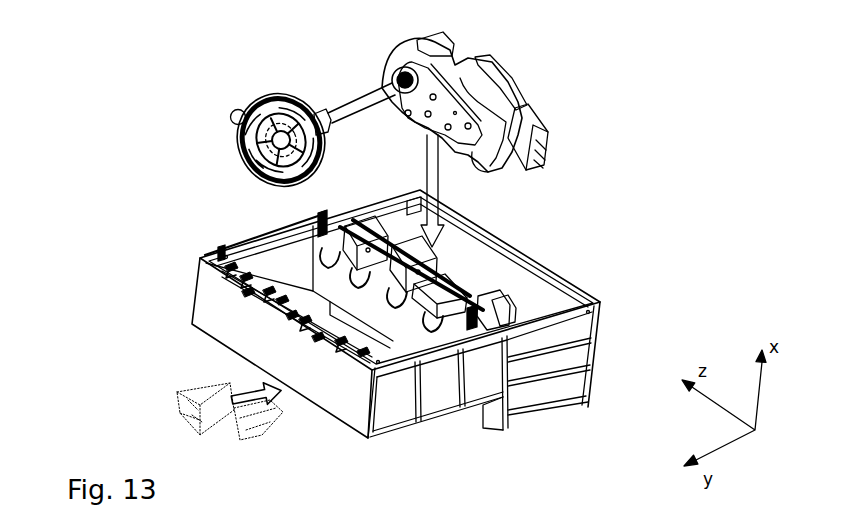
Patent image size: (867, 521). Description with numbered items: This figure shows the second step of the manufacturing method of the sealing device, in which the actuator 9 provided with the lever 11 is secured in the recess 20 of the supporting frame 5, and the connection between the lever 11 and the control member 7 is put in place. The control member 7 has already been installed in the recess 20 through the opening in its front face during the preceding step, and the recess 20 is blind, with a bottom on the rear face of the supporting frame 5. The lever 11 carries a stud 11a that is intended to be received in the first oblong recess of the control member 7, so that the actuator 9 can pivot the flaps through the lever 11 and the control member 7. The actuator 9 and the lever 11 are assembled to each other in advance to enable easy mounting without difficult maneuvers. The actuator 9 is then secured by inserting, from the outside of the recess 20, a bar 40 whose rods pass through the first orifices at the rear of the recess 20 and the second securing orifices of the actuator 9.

The supporting frame 5 is at (589, 385).
The control member 7 is at (450, 272).
The actuator 9 is at (532, 99).
The lever 11 is at (258, 170).
The stud 11a is at (242, 106).
The recess 20 is at (534, 287).
The bar 40 is at (178, 402).